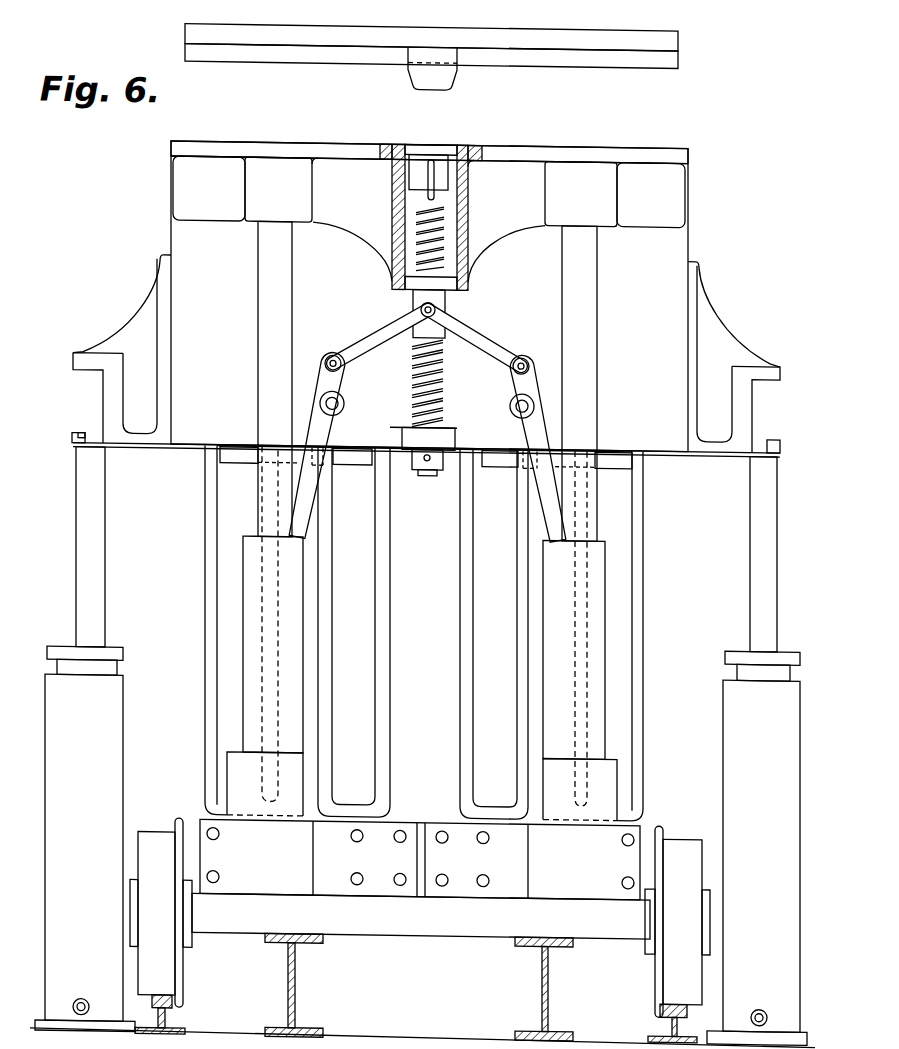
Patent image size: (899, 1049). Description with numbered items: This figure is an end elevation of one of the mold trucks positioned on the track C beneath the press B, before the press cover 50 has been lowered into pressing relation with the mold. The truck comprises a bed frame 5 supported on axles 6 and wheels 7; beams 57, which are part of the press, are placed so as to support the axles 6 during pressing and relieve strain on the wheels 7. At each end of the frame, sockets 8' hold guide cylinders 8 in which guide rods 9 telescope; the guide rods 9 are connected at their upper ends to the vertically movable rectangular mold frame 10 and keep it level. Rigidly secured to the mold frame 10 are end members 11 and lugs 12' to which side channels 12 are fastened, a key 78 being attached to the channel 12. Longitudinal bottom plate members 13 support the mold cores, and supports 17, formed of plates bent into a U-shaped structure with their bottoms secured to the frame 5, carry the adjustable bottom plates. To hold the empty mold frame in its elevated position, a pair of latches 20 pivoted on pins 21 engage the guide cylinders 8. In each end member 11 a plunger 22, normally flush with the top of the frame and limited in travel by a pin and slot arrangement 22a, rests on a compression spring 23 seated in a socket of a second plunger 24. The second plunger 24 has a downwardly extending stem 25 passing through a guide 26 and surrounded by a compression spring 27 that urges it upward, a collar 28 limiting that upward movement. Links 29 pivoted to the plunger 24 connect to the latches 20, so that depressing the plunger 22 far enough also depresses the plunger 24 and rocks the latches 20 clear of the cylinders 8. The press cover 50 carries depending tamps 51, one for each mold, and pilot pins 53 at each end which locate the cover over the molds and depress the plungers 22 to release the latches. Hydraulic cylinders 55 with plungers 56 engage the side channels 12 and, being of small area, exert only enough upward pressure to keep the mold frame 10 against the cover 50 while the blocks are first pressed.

The press cover 50 is at (389, 31).
The tamps 51 is at (322, 56).
The pilot pins 53 is at (440, 80).
The press B is at (522, 28).
The plunger 22 is at (433, 146).
The end members 11 is at (521, 152).
The pin and slot arrangement 22a is at (436, 196).
The compression spring 23 is at (452, 221).
The second plunger 24 is at (404, 222).
The mold frame 10 is at (682, 236).
The stem 25 is at (425, 296).
The links 29 is at (367, 342).
The lugs 12' is at (428, 348).
The guide rods 9 is at (268, 324).
The compression spring 27 is at (426, 407).
The pins 21 is at (338, 405).
The side channels 12 is at (427, 402).
The key 78 is at (80, 432).
The guide 26 is at (457, 434).
The longitudinal bottom plate members 13 is at (242, 466).
The collar 28 is at (417, 463).
The latches 20 is at (303, 503).
The plungers 56 is at (88, 545).
The guide cylinders 8 is at (420, 626).
The supports 17 is at (207, 714).
The sockets 8' is at (422, 786).
The wheels 7 is at (153, 827).
The bed frame 5 is at (420, 859).
The axles 6 is at (475, 927).
The beams 57 is at (296, 1002).
The track C is at (183, 1003).
The hydraulic cylinders 55 is at (421, 843).